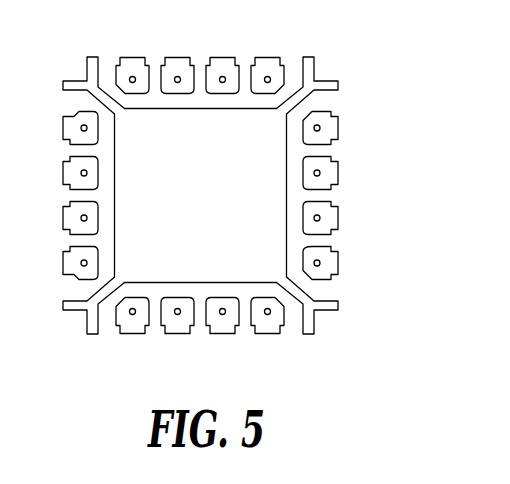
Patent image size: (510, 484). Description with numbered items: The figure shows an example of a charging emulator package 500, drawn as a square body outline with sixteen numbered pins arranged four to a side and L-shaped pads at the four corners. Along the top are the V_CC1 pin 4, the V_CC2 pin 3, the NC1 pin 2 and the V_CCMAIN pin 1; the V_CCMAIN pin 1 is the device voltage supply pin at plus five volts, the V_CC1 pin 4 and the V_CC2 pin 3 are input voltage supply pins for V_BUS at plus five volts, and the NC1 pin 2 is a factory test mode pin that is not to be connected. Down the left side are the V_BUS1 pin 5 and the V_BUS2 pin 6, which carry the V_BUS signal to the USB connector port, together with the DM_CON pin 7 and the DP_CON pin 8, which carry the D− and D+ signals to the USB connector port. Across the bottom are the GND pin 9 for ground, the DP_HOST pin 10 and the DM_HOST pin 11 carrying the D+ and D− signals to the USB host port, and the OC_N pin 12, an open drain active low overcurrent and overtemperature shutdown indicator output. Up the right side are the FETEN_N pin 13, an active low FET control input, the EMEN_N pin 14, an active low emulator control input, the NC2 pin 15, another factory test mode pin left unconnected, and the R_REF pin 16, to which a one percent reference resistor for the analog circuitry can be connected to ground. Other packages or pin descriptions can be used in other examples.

The charging emulator package 500 is at (423, 75).
The V_CCMAIN pin 1 is at (267, 61).
The NC1 pin 2 is at (222, 61).
The V_CC2 pin 3 is at (177, 61).
The V_CC1 pin 4 is at (132, 61).
The V_BUS1 pin 5 is at (71, 128).
The V_BUS2 pin 6 is at (71, 173).
The DM_CON pin 7 is at (71, 218).
The DP_CON pin 8 is at (71, 263).
The GND pin 9 is at (132, 332).
The DP_HOST pin 10 is at (177, 332).
The DM_HOST pin 11 is at (222, 332).
The OC_N pin 12 is at (267, 332).
The FETEN_N pin 13 is at (334, 263).
The EMEN_N pin 14 is at (334, 218).
The NC2 pin 15 is at (334, 173).
The R_REF pin 16 is at (334, 128).